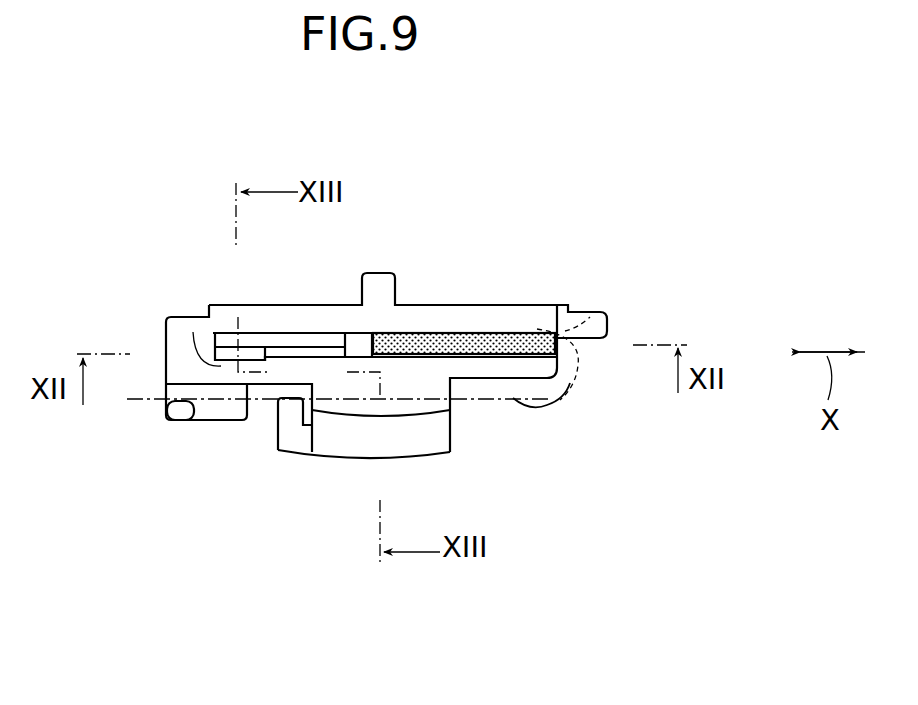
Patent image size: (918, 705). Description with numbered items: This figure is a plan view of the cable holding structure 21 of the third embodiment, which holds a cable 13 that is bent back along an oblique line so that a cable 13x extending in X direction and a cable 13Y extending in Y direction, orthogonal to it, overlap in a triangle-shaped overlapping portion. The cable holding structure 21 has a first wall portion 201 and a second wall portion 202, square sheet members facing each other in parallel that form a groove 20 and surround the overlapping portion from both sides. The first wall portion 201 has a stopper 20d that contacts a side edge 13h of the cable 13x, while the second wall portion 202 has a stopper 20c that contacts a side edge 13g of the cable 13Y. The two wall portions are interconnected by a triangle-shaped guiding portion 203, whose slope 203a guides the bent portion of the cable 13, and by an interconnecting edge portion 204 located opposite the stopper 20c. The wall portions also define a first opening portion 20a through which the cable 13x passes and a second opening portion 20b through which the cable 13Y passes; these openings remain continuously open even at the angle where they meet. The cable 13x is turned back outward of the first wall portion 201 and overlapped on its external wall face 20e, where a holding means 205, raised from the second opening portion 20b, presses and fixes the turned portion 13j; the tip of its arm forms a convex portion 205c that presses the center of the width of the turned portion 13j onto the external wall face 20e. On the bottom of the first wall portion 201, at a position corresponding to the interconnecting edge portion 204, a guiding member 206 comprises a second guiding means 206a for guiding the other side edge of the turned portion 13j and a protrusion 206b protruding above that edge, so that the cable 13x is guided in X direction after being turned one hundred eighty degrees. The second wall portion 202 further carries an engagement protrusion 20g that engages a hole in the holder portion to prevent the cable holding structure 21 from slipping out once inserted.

The cable 13 is at (562, 410).
The side edge 13g is at (590, 312).
The side edge 13h is at (191, 348).
The turned portion 13j is at (396, 400).
The cable extending in X direction 13x is at (145, 392).
The cable extending in Y direction 13Y is at (216, 327).
The groove 20 is at (295, 332).
The first opening portion 20a is at (560, 352).
The second opening portion 20b is at (329, 322).
The stopper 20c is at (537, 323).
The stopper 20d is at (254, 332).
The external wall face 20e is at (468, 380).
The engagement protrusion 20g is at (387, 273).
The cable holding structure 21 is at (613, 253).
The first wall portion 201 is at (508, 381).
The second wall portion 202 is at (505, 299).
The guiding portion 203 is at (429, 322).
The slope 203a is at (481, 330).
The interconnecting edge portion 204 is at (161, 406).
The holding means 205 is at (342, 459).
The convex portion 205c is at (278, 415).
The guiding member 206 is at (197, 428).
The second guiding means 206a is at (217, 390).
The protrusion 206b is at (163, 422).